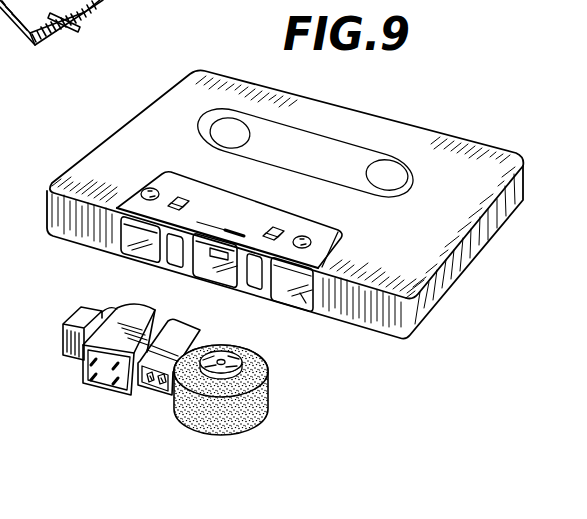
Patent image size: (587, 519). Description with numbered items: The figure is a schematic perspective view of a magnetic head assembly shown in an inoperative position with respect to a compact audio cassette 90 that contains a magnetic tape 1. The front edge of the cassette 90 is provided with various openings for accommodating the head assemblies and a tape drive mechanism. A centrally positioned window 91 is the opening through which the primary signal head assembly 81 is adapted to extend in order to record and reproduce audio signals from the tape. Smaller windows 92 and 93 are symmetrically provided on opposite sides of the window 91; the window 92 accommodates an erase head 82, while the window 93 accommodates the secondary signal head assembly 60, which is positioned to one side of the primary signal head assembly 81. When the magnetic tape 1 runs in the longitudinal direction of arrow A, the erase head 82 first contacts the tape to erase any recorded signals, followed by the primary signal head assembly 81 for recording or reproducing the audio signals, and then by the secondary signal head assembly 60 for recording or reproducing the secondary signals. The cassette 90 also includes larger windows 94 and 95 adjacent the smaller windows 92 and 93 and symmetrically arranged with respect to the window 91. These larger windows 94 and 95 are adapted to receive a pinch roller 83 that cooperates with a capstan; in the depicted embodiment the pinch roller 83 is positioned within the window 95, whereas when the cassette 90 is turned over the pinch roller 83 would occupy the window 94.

The magnetic tape 1 is at (316, 316).
The compact audio cassette 90 is at (170, 112).
The larger window 94 is at (113, 222).
The smaller window 92 is at (143, 257).
The centrally positioned window 91 is at (230, 258).
The smaller window 93 is at (258, 284).
The larger window 95 is at (333, 262).
The erase head 82 is at (70, 350).
The primary signal head assembly 81 is at (102, 388).
The secondary signal head assembly 60 is at (153, 393).
The pinch roller 83 is at (231, 430).